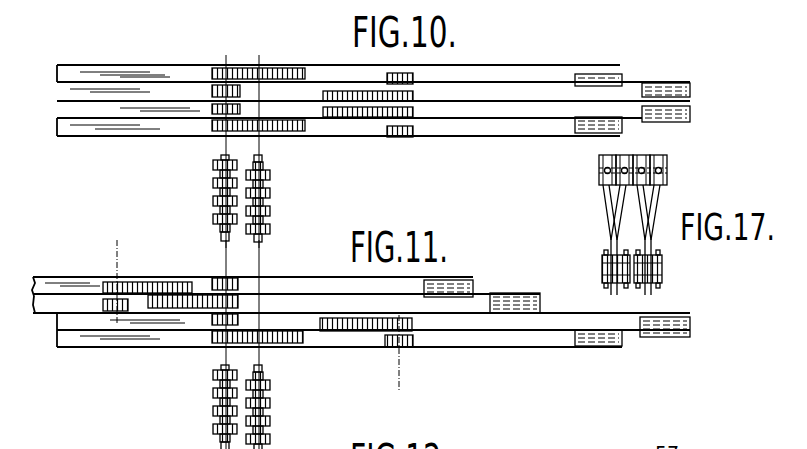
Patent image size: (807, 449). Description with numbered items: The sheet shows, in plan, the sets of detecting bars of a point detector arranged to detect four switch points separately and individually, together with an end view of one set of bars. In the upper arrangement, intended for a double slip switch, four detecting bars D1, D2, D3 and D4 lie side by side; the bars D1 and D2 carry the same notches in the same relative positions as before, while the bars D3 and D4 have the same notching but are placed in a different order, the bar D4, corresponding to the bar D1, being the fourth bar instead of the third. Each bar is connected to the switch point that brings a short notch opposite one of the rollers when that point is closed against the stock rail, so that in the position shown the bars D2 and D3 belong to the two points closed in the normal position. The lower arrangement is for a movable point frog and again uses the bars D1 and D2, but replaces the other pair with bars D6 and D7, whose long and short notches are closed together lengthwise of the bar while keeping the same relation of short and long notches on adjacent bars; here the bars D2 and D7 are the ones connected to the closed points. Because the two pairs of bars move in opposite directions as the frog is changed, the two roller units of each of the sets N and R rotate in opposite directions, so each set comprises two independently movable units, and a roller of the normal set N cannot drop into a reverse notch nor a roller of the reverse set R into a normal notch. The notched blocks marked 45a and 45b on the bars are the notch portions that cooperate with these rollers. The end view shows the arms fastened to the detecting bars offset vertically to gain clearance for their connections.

In FIG. 10, the detecting bar D1 is at (65, 123).
In FIG. 11, the detecting bar D1 is at (63, 337).
In FIG. 17, the detecting bar D1 is at (603, 155).
In FIG. 10, the detecting bar D2 is at (65, 110).
In FIG. 11, the detecting bar D2 is at (62, 327).
In FIG. 17, the detecting bar D2 is at (623, 163).
In FIG. 10, the detecting bar D3 is at (65, 95).
In FIG. 17, the detecting bar D3 is at (642, 157).
In FIG. 10, the detecting bar D4 is at (63, 72).
In FIG. 17, the detecting bar D4 is at (660, 155).
In FIG. 11, the detecting bar D6 is at (80, 302).
In FIG. 11, the detecting bar D7 is at (55, 287).
In FIG. 10, the contact block 45a is at (402, 136).
In FIG. 11, the contact block 45a is at (223, 280).
In FIG. 10, the contact block 45b is at (238, 70).
In FIG. 11, the contact block 45b is at (283, 342).
In FIG. 10, the normal set of rollers N is at (213, 183).
In FIG. 11, the normal set of rollers N is at (213, 403).
In FIG. 10, the reverse set of rollers R is at (270, 183).
In FIG. 11, the reverse set of rollers R is at (270, 403).